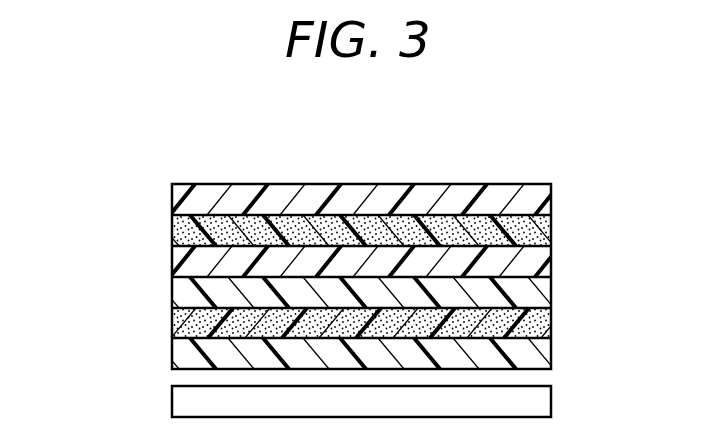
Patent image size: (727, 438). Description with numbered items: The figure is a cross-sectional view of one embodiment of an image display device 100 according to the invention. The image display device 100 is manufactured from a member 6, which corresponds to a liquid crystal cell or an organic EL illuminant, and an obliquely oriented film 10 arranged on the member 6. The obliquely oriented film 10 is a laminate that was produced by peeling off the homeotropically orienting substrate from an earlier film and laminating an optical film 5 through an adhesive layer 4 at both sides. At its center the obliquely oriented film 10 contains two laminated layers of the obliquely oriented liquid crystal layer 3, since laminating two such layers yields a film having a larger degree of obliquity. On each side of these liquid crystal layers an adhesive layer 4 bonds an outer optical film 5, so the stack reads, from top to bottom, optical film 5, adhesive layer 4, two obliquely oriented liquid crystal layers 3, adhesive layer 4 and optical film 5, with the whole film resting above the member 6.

The image display device 100 is at (522, 174).
The obliquely oriented film 10 is at (160, 178).
The optical film 5 is at (537, 197).
The adhesive layer 4 is at (540, 232).
The obliquely oriented liquid crystal layer 3 is at (538, 265).
The member 6 is at (537, 403).